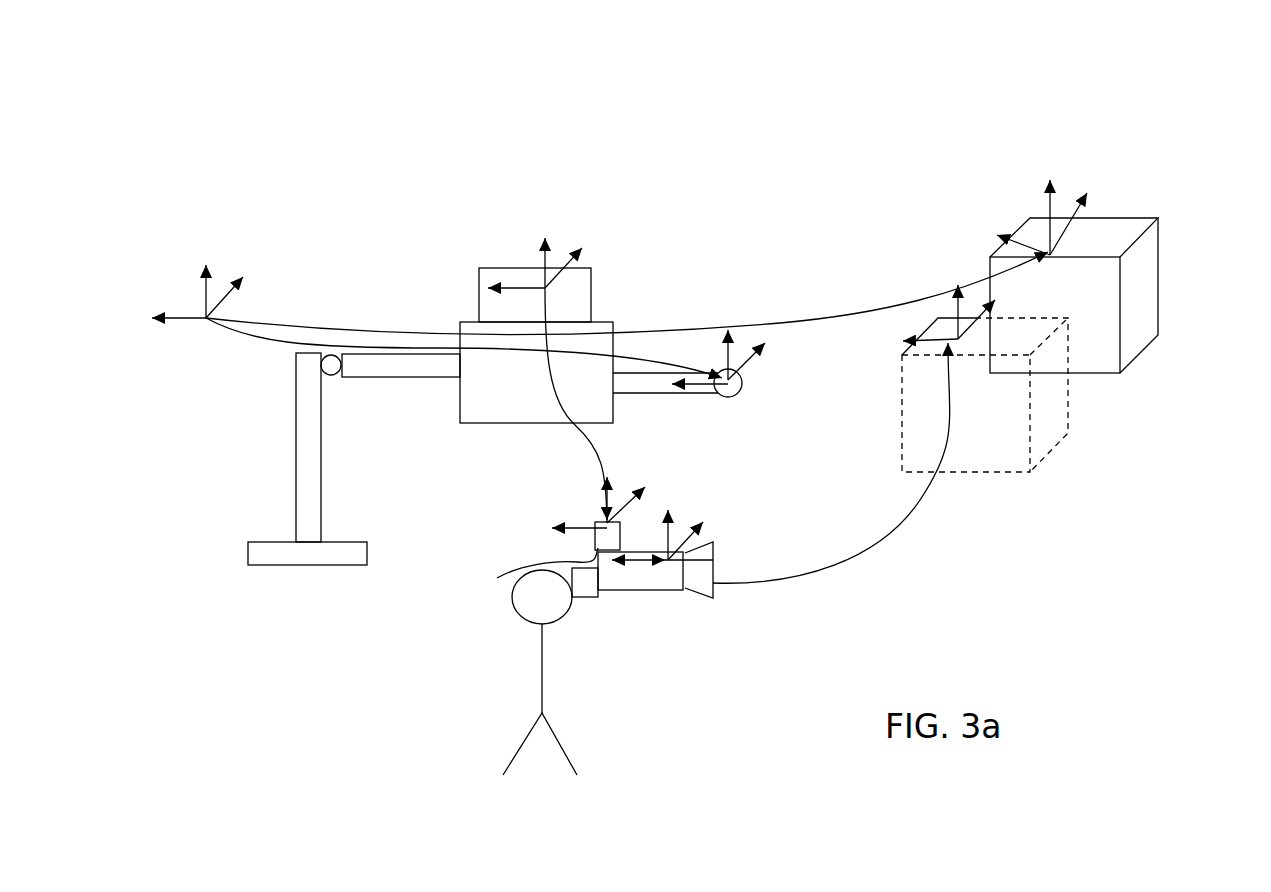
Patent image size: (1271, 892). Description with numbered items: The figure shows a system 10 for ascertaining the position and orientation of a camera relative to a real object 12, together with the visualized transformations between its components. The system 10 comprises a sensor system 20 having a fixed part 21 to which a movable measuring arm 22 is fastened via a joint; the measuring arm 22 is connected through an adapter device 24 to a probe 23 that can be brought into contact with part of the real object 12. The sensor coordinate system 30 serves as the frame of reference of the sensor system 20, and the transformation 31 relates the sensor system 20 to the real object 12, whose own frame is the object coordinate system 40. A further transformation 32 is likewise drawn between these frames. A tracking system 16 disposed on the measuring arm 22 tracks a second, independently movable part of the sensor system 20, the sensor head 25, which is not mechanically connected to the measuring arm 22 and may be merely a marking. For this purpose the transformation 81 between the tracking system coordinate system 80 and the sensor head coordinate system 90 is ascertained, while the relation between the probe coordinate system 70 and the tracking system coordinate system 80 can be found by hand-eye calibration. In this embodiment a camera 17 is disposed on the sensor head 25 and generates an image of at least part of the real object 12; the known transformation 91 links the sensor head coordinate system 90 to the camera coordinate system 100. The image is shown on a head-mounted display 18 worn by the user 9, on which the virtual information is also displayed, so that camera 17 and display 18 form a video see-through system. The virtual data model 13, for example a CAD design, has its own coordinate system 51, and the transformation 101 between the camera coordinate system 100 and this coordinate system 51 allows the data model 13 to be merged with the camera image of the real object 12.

The user 9 is at (538, 670).
The system 10 is at (380, 160).
The real object 12 is at (1145, 348).
The data model 13 is at (1050, 453).
The tracking system 16 is at (592, 288).
The camera 17 is at (663, 593).
The head-mounted display 18 is at (588, 600).
The sensor system 20 is at (180, 503).
The fixed part 21 is at (323, 522).
The measuring arm 22 is at (412, 380).
The probe 23 is at (735, 397).
The adapter device 24 is at (497, 425).
The sensor head 25 is at (595, 538).
The sensor coordinate system 30 is at (180, 310).
The transformation 31 is at (328, 345).
The transformation 32 is at (867, 312).
The object coordinate system 40 is at (1055, 185).
The coordinate system of the data model 51 is at (957, 294).
The probe coordinate system 70 is at (747, 367).
The tracking system coordinate system 80 is at (537, 265).
The transformation 81 is at (603, 445).
The sensor head coordinate system 90 is at (622, 520).
The transformation 91 is at (525, 576).
The camera coordinate system 100 is at (707, 538).
The transformation 101 is at (831, 476).